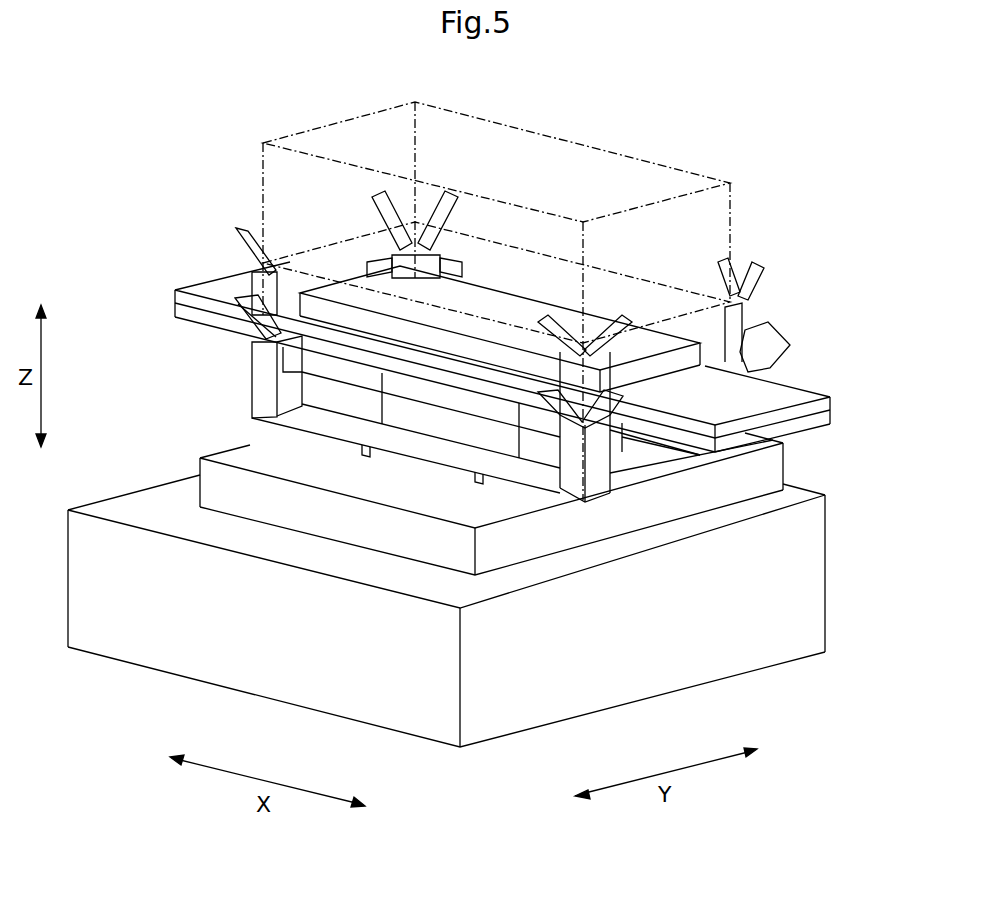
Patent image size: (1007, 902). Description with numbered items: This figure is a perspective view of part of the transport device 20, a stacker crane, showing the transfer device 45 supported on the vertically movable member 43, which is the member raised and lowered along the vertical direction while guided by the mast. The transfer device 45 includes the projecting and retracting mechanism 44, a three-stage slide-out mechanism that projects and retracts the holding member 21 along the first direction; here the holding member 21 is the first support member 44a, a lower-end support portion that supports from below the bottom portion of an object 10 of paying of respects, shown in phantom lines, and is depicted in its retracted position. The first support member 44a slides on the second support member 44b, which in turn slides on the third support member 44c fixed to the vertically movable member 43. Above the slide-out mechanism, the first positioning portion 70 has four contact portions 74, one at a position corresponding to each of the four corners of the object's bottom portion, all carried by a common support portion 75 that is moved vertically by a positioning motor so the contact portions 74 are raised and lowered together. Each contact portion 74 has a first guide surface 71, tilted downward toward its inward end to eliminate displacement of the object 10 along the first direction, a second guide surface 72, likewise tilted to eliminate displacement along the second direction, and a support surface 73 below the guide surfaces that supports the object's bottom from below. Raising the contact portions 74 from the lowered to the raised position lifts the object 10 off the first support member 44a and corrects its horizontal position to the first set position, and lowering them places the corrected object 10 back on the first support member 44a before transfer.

The object of paying of respects 10 is at (577, 130).
The transport device 20 is at (128, 288).
The holding member 21 is at (483, 300).
The vertically movable member 43 is at (110, 640).
The projecting and retracting mechanism 44 is at (456, 383).
The first support member 44a is at (500, 311).
The second support member 44b is at (440, 367).
The third support member 44c is at (493, 393).
The transfer device 45 is at (188, 332).
The first positioning portion 70 is at (440, 260).
The first guide surface 71 is at (397, 200).
The second guide surface 72 is at (437, 200).
The support surface 73 is at (400, 232).
The contact portion 74 is at (475, 402).
The support portion 75 is at (527, 483).